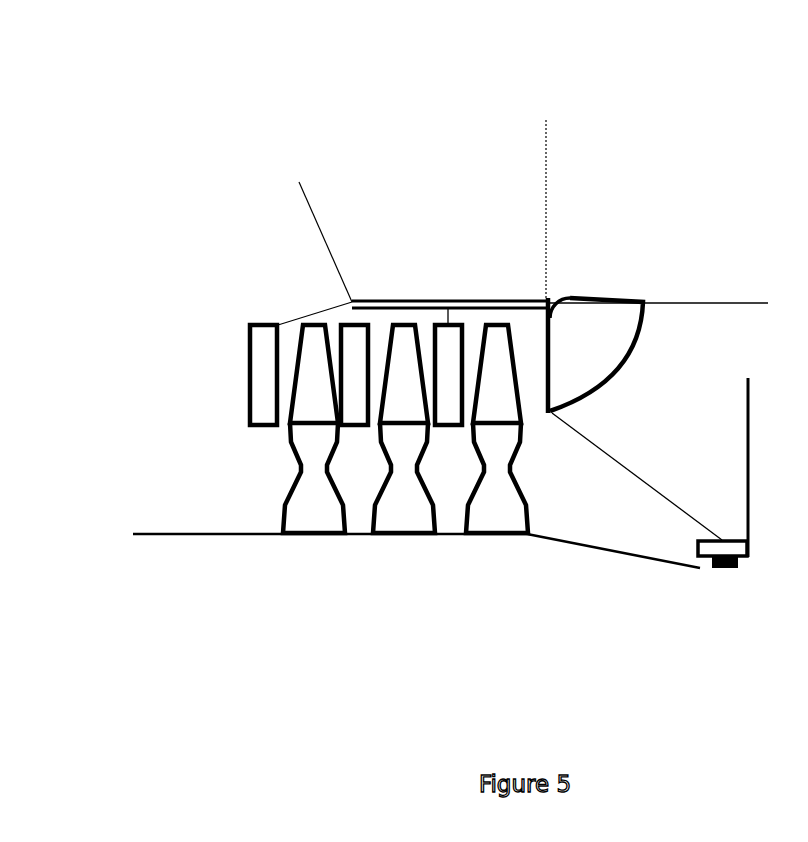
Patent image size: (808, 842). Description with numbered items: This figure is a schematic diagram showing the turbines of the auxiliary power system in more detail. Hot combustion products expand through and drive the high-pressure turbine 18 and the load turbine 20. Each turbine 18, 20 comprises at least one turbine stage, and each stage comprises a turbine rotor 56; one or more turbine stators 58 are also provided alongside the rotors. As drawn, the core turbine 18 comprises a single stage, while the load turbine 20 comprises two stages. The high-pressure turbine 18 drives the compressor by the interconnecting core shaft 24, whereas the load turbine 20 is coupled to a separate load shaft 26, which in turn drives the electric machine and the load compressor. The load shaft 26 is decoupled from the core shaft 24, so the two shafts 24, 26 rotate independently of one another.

The high-pressure turbine 18 is at (271, 246).
The load turbine 20 is at (444, 237).
The core shaft 24 is at (177, 534).
The load shaft 26 is at (626, 556).
The turbine rotor 56 is at (300, 378).
The turbine stator 58 is at (354, 325).